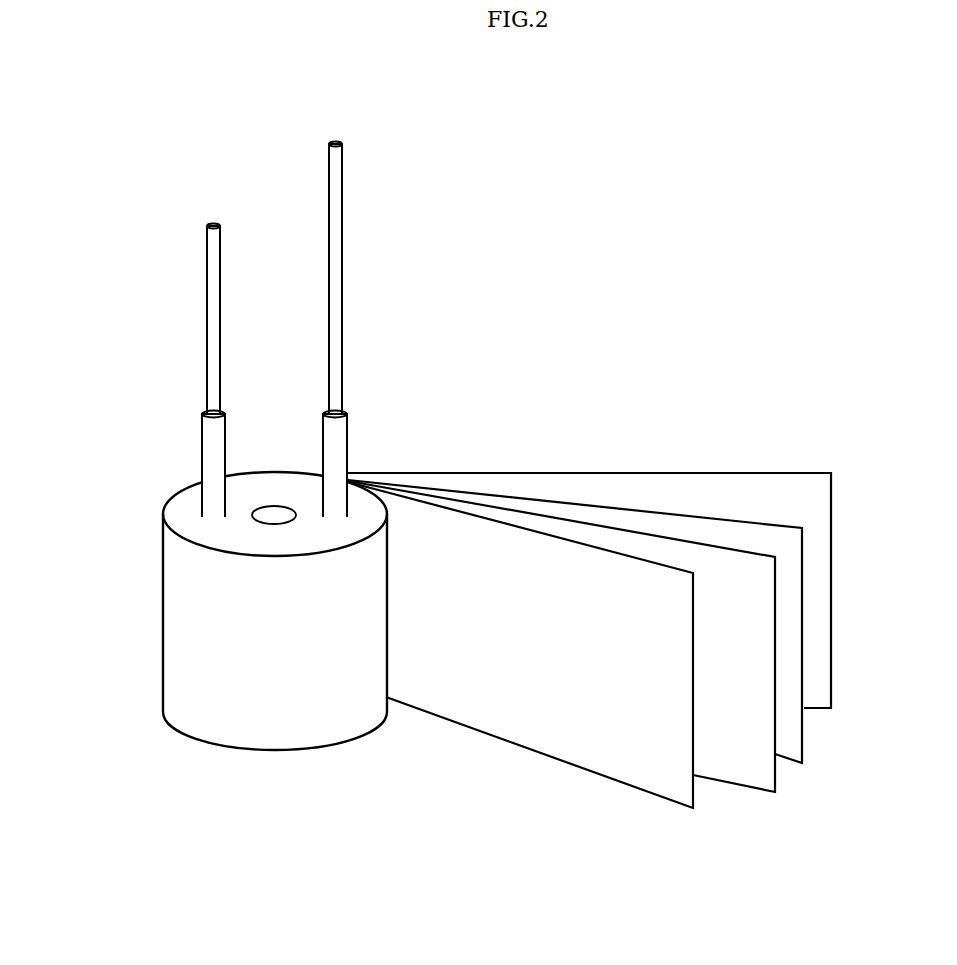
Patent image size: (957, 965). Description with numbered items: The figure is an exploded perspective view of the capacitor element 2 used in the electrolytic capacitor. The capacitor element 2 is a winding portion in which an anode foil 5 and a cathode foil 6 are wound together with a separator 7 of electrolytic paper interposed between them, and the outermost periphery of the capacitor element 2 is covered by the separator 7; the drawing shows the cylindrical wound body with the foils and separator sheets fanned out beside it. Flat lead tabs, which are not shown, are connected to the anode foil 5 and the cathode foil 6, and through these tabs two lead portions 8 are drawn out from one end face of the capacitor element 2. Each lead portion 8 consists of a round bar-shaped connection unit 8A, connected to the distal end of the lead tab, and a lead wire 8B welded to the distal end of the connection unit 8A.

The capacitor element 2 is at (190, 637).
The anode foil 5 is at (615, 777).
The cathode foil 6 is at (802, 735).
The separator 7 is at (831, 665).
The lead portion 8 is at (275, 330).
The connection unit 8A is at (202, 448).
The lead wire 8B is at (207, 383).